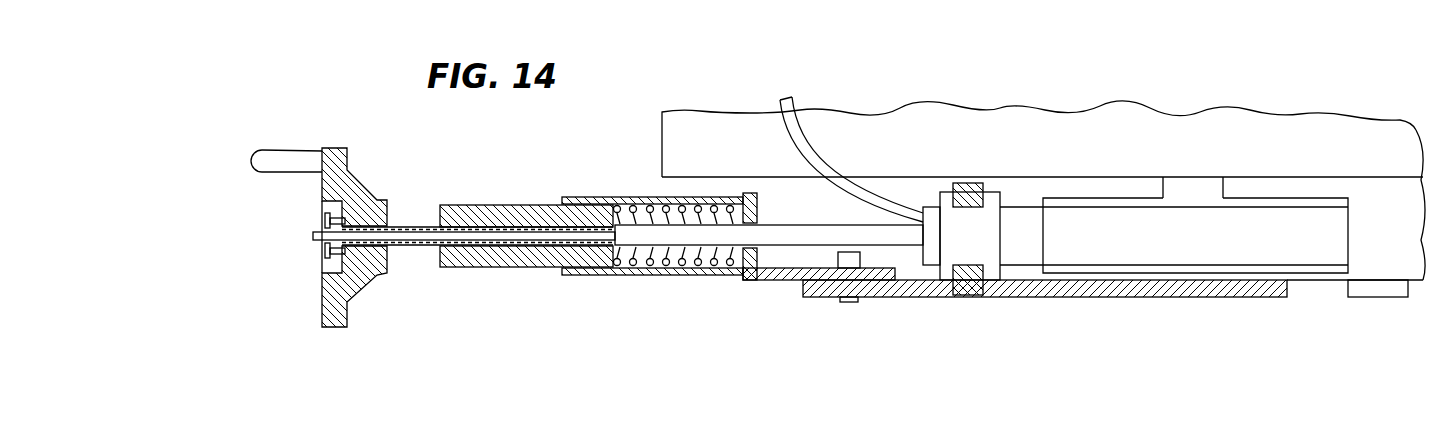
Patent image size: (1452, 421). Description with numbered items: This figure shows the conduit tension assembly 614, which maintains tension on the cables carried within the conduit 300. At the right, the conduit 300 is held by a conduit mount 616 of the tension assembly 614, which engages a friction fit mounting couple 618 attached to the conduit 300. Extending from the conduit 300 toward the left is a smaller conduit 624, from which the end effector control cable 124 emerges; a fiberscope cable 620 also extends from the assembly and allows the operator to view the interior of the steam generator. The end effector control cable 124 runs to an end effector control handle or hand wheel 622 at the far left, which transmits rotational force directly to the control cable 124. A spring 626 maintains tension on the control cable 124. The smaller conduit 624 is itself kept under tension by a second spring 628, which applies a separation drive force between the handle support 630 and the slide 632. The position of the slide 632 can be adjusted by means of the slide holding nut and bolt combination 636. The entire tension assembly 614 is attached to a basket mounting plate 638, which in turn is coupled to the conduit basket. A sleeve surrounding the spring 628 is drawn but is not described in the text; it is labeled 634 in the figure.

The end effector control handle 622 is at (277, 151).
The end effector control cable 124 is at (418, 236).
The spring 626 is at (540, 227).
The handle support 630 is at (475, 207).
The spring housing 634 is at (617, 197).
The spring 628 is at (683, 203).
The smaller conduit 624 is at (775, 225).
The fiberscope cable 620 is at (808, 128).
The conduit tension assembly 614 is at (1077, 102).
The conduit 300 is at (1128, 267).
The friction fit mounting couple 618 is at (947, 272).
The conduit mount 616 is at (970, 185).
The slide 632 is at (768, 281).
The basket mounting plate 638 is at (1245, 297).
The slide holding nut and bolt combination 636 is at (850, 302).